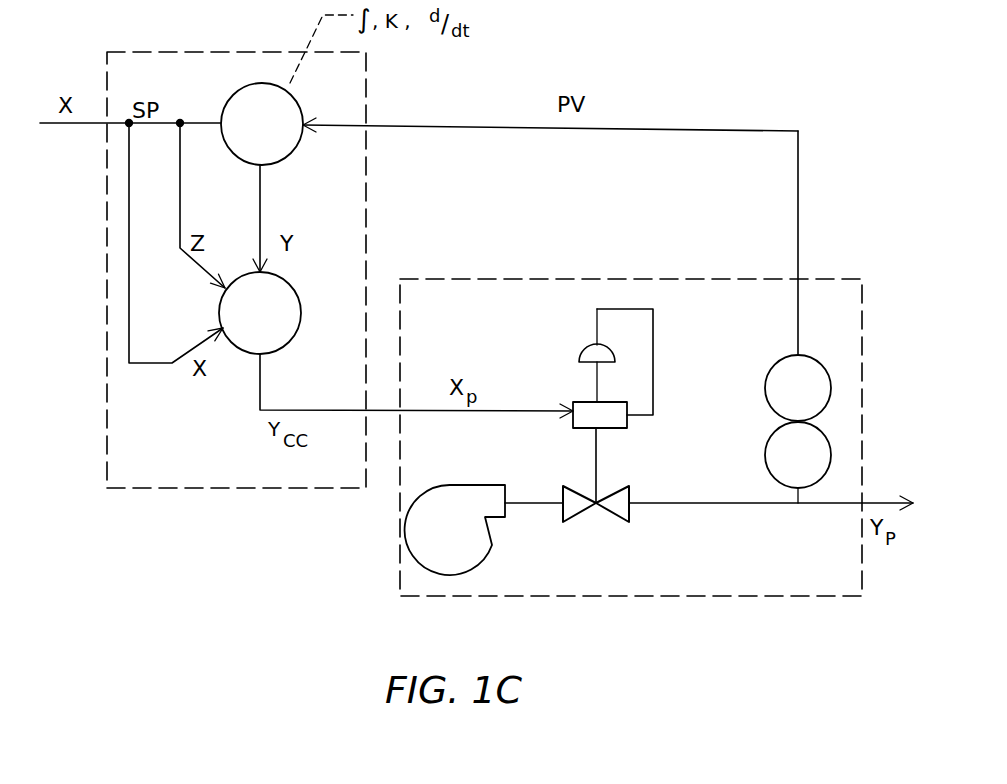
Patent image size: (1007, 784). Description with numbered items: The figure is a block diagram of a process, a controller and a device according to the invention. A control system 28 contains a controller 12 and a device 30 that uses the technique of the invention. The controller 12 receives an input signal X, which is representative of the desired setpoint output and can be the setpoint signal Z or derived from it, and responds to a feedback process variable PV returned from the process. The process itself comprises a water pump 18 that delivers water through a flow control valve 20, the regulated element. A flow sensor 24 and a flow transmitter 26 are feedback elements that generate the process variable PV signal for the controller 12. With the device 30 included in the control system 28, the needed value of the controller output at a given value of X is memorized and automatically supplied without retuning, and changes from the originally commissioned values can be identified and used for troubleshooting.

The controller 12 is at (301, 136).
The water pump 18 is at (492, 543).
The flow control valve 20 is at (597, 507).
The flow sensor 24 is at (766, 458).
The flow transmitter 26 is at (766, 389).
The control system 28 is at (193, 52).
The device 30 is at (296, 340).